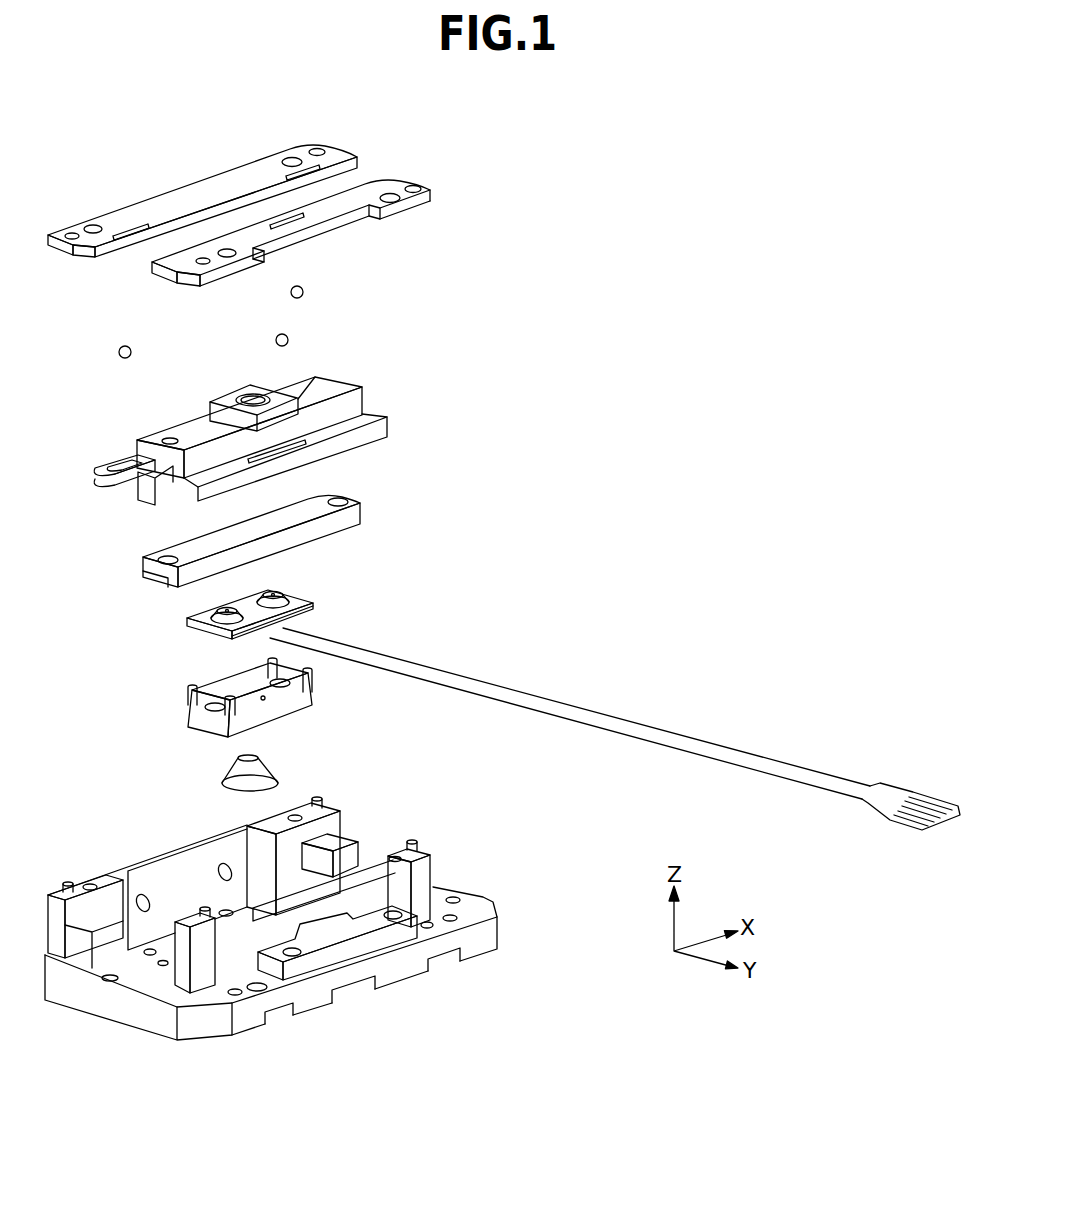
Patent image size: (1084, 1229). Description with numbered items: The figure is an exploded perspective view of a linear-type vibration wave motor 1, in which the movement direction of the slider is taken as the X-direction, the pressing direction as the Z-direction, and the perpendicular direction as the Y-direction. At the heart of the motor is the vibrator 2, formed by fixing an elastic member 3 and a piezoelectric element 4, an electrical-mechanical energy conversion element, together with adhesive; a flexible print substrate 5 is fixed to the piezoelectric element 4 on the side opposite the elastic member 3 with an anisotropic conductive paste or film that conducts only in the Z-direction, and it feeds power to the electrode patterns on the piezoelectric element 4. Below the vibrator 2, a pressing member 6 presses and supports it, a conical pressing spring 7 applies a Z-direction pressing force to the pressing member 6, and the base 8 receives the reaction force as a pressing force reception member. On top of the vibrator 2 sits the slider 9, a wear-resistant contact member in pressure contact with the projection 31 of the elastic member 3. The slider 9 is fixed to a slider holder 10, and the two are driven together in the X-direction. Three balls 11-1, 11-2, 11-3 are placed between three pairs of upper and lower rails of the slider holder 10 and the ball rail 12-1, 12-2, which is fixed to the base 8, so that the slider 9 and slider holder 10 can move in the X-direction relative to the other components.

The vibration wave motor 1 is at (648, 253).
The vibrator 2 is at (265, 599).
The elastic member 3 is at (298, 598).
The piezoelectric element 4 is at (303, 622).
The flexible print substrate 5 is at (553, 692).
The pressing member 6 is at (303, 698).
The pressing spring 7 is at (260, 774).
The base 8 is at (440, 897).
The slider 9 is at (353, 512).
The slider holder 10 is at (355, 402).
The ball 11-1 is at (303, 292).
The ball 11-2 is at (288, 339).
The ball 11-3 is at (125, 359).
The ball rail 12-1 is at (433, 201).
The ball rail 12-2 is at (358, 165).
The projection 31 is at (213, 608).